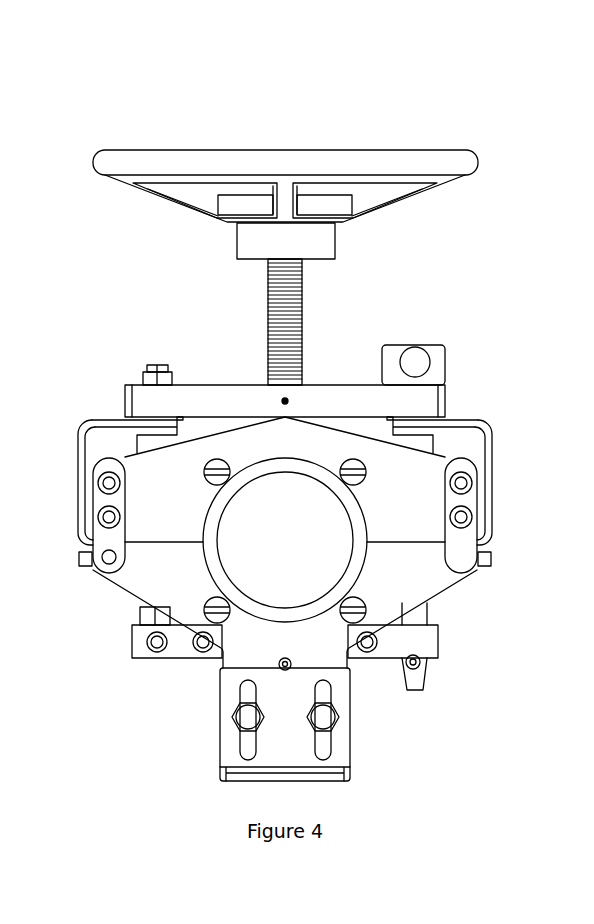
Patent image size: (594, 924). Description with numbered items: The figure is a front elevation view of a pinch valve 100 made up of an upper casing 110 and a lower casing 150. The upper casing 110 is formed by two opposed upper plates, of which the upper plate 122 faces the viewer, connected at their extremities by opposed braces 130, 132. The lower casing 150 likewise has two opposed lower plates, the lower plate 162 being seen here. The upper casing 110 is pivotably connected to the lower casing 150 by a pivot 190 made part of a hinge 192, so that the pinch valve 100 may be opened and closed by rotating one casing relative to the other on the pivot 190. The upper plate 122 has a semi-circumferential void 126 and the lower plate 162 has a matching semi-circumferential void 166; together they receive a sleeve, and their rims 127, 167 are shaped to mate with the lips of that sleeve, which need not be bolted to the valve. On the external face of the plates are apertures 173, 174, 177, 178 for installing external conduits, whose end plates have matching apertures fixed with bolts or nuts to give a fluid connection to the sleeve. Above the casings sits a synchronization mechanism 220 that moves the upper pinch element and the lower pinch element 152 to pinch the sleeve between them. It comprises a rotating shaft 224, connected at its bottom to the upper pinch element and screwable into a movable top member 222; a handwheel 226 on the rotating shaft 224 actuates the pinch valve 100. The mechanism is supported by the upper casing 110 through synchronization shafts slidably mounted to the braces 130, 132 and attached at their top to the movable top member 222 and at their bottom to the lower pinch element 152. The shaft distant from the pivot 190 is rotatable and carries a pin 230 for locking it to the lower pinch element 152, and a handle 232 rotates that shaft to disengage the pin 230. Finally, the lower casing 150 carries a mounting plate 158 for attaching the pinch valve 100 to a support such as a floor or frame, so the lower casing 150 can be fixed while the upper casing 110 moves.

The pinch valve 100 is at (539, 112).
The upper casing 110 is at (503, 427).
The upper plate 122 is at (270, 450).
The semi-circumferential void 126 is at (297, 515).
The rim 127 is at (210, 520).
The brace 130 is at (118, 418).
The brace 132 is at (450, 417).
The lower casing 150 is at (503, 555).
The lower pinch element 152 is at (194, 660).
The mounting plate 158 is at (231, 758).
The lower plate 162 is at (238, 660).
The semi-circumferential void 166 is at (243, 582).
The rim 167 is at (215, 570).
The aperture 173 is at (204, 472).
The aperture 174 is at (366, 474).
The aperture 177 is at (205, 600).
The aperture 178 is at (356, 604).
The pivot 190 is at (105, 570).
The hinge 192 is at (108, 538).
The synchronization mechanism 220 is at (116, 340).
The movable top member 222 is at (223, 400).
The rotating shaft 224 is at (302, 312).
The handwheel 226 is at (180, 152).
The pin 230 is at (420, 665).
The handle 232 is at (415, 360).